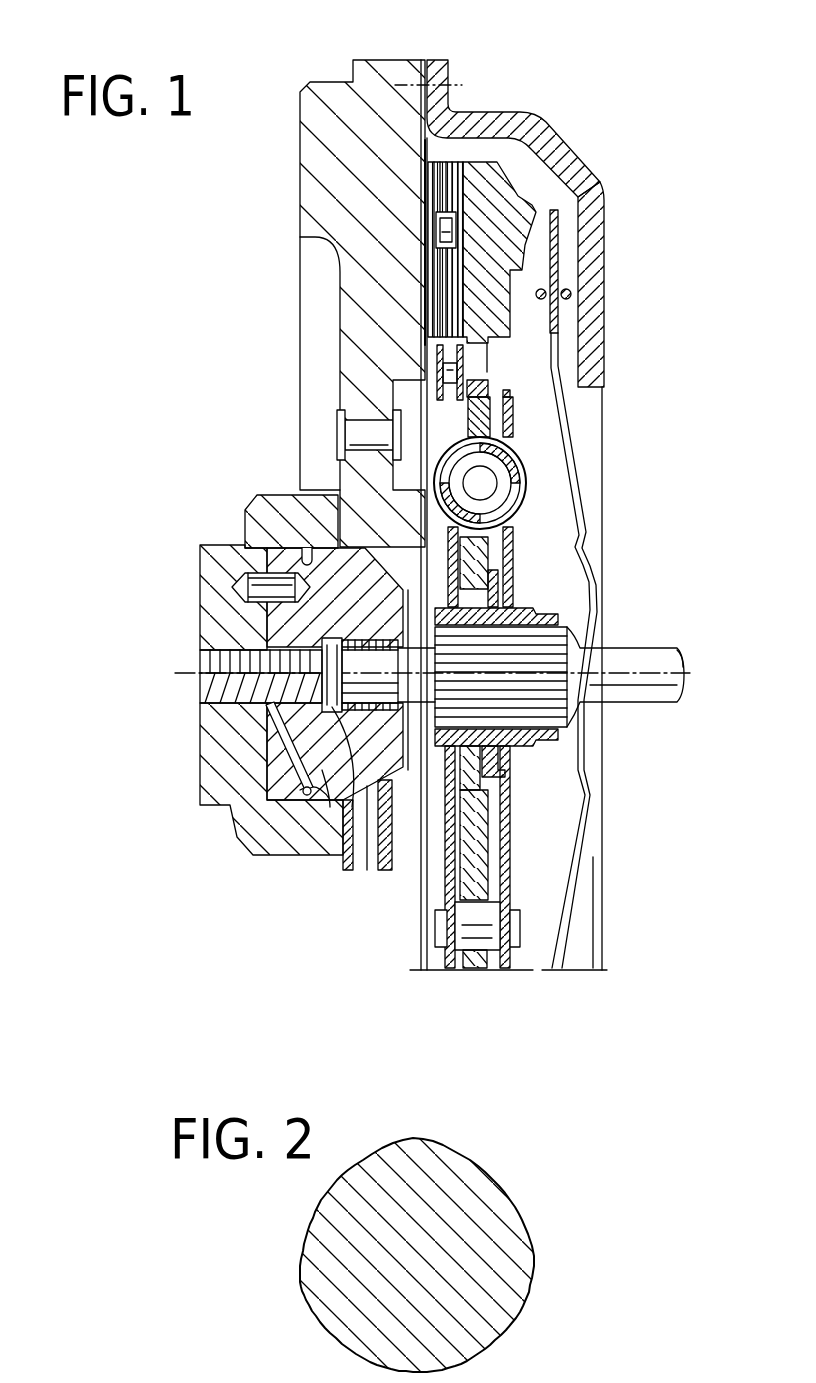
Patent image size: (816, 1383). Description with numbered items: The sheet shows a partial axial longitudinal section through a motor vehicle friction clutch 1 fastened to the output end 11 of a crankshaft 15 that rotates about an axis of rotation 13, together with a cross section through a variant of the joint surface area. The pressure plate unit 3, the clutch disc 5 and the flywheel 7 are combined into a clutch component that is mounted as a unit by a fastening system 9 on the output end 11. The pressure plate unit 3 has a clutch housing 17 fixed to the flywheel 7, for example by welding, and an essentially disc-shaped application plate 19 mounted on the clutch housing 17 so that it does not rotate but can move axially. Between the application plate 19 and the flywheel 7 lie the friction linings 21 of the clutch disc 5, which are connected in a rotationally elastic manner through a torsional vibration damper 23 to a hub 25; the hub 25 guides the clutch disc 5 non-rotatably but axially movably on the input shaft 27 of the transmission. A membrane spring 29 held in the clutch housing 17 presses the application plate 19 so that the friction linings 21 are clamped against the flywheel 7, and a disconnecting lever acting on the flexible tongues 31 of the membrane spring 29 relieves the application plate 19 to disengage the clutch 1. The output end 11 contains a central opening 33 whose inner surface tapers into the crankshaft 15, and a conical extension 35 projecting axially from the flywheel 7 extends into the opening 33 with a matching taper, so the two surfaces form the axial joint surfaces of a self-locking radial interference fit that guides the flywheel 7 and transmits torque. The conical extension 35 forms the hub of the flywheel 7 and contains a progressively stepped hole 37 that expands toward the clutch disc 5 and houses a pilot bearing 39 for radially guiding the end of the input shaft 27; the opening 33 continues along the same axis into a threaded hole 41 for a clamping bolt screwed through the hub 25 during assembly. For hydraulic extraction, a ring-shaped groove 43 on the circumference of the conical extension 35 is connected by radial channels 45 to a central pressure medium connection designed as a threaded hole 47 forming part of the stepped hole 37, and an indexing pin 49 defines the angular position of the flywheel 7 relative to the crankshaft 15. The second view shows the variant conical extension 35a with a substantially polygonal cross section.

In FIG. 1, the friction clutch 1 is at (655, 227).
In FIG. 1, the pressure plate unit 3 is at (520, 110).
In FIG. 1, the clutch disc 5 is at (461, 158).
In FIG. 1, the flywheel 7 is at (318, 80).
In FIG. 1, the fastening system 9 is at (288, 490).
In FIG. 1, the output end 11 is at (262, 498).
In FIG. 1, the axis of rotation 13 is at (175, 676).
In FIG. 1, the crankshaft 15 is at (208, 563).
In FIG. 1, the clutch housing 17 is at (583, 197).
In FIG. 1, the application plate 19 is at (508, 197).
In FIG. 1, the friction linings 21 is at (425, 185).
In FIG. 1, the torsional vibration damper 23 is at (532, 492).
In FIG. 1, the hub 25 is at (537, 610).
In FIG. 1, the input shaft 27 is at (638, 660).
In FIG. 1, the membrane spring 29 is at (545, 262).
In FIG. 1, the flexible tongues 31 is at (585, 513).
In FIG. 1, the central opening 33 is at (275, 778).
In FIG. 1, the conical extension 35 is at (324, 838).
In FIG. 2, the conical extension 35a is at (507, 1257).
In FIG. 1, the stepped hole 37 is at (354, 849).
In FIG. 1, the pilot bearing 39 is at (394, 846).
In FIG. 1, the threaded hole 41 is at (222, 648).
In FIG. 1, the ring-shaped groove 43 is at (263, 853).
In FIG. 1, the radial channels 45 is at (287, 742).
In FIG. 1, the threaded hole 47 is at (287, 643).
In FIG. 1, the indexing pin 49 is at (268, 515).